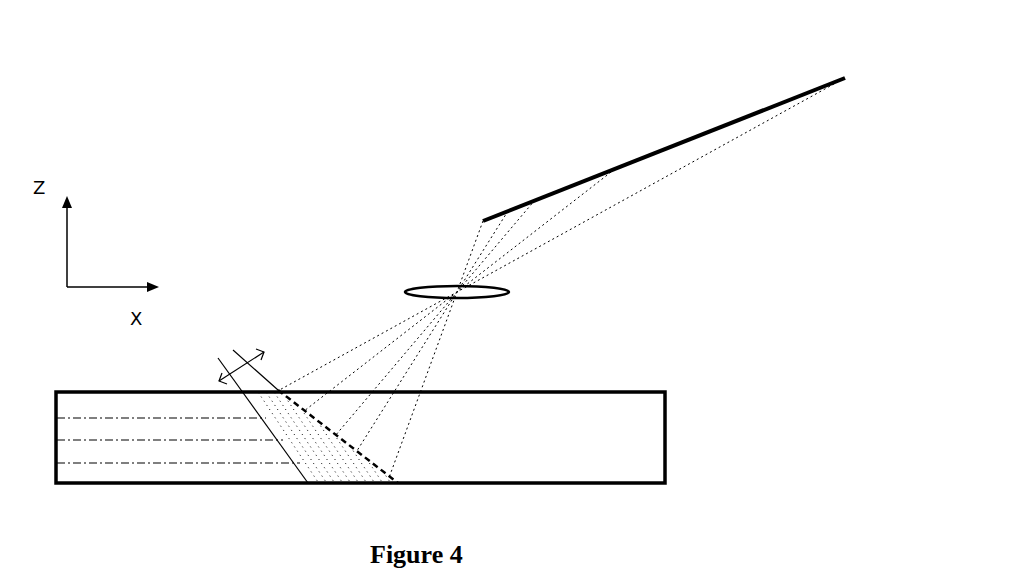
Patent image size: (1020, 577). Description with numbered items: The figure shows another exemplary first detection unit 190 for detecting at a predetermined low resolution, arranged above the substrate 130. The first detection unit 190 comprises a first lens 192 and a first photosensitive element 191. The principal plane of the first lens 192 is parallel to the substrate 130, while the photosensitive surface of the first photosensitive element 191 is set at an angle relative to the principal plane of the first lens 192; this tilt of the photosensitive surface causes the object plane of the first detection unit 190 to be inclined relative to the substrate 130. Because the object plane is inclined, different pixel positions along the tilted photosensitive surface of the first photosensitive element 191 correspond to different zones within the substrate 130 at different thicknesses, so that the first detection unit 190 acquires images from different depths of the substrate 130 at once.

The substrate 130 is at (520, 402).
The first detection unit 190 is at (262, 158).
The first photosensitive element 191 is at (477, 213).
The first lens 192 is at (422, 285).